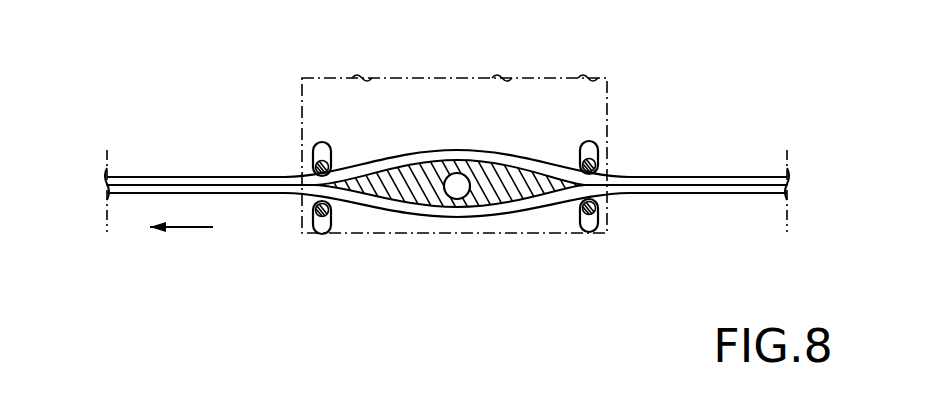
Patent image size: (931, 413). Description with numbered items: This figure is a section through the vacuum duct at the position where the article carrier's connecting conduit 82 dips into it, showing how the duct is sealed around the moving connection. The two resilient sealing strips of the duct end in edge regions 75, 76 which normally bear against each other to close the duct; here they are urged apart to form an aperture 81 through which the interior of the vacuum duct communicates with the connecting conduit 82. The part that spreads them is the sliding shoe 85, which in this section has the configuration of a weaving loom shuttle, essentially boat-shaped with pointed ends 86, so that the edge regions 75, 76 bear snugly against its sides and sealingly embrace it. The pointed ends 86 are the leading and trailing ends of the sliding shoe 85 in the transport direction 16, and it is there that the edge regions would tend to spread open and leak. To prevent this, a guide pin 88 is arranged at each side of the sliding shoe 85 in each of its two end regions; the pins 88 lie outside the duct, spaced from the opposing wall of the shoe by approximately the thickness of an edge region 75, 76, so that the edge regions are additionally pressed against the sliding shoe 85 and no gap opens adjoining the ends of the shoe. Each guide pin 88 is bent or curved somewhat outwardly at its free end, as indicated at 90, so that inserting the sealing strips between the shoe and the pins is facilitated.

The transport direction 16 is at (190, 229).
The edge region 75 is at (735, 193).
The edge region 76 is at (723, 180).
The aperture 81 is at (427, 167).
The connecting conduit 82 is at (457, 188).
The sliding shoe 85 is at (503, 183).
The pointed ends 86 is at (352, 195).
The guide pin 88 is at (316, 167).
The outwardly bent free end 90 is at (320, 142).